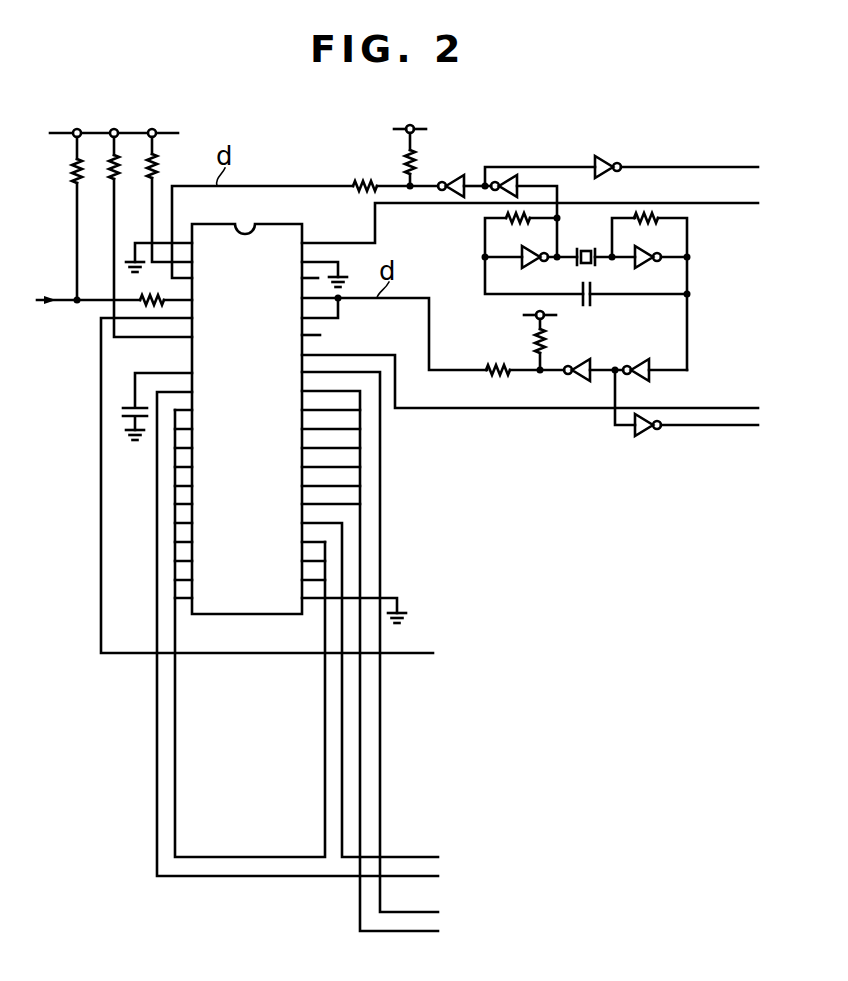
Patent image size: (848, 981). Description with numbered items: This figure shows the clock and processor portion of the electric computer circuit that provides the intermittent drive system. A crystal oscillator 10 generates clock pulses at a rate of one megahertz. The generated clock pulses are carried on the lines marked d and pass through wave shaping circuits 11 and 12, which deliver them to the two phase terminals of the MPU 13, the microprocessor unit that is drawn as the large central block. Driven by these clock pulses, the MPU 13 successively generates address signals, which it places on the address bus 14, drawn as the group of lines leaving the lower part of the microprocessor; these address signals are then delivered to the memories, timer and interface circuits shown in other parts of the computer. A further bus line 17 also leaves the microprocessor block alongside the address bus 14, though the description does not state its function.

The crystal oscillator 10 is at (590, 268).
The wave shaping circuit 11 is at (452, 178).
The wave shaping circuit 12 is at (652, 362).
The MPU (microprocessor unit) 13 is at (279, 223).
The address bus 14 is at (157, 763).
The signal line 17 is at (380, 755).